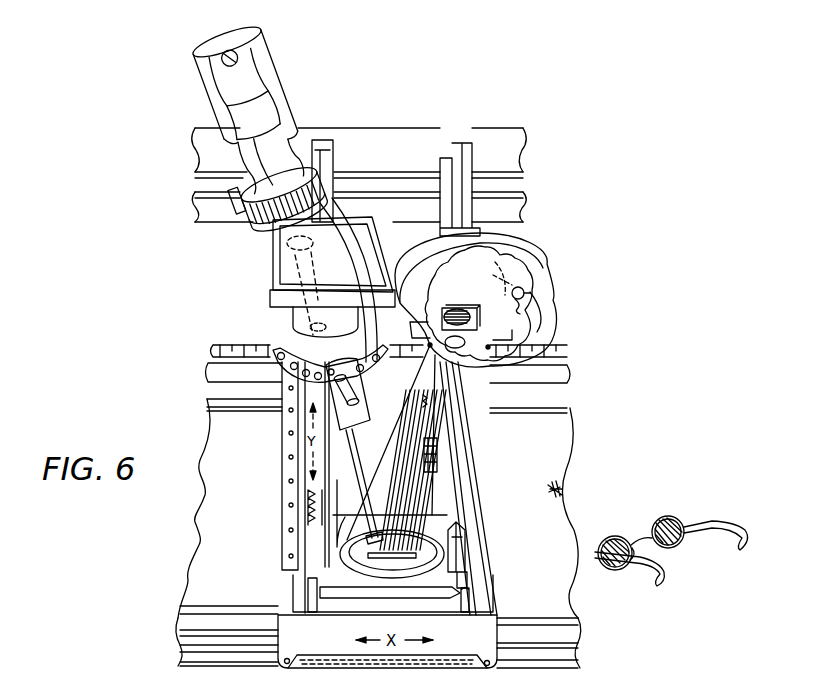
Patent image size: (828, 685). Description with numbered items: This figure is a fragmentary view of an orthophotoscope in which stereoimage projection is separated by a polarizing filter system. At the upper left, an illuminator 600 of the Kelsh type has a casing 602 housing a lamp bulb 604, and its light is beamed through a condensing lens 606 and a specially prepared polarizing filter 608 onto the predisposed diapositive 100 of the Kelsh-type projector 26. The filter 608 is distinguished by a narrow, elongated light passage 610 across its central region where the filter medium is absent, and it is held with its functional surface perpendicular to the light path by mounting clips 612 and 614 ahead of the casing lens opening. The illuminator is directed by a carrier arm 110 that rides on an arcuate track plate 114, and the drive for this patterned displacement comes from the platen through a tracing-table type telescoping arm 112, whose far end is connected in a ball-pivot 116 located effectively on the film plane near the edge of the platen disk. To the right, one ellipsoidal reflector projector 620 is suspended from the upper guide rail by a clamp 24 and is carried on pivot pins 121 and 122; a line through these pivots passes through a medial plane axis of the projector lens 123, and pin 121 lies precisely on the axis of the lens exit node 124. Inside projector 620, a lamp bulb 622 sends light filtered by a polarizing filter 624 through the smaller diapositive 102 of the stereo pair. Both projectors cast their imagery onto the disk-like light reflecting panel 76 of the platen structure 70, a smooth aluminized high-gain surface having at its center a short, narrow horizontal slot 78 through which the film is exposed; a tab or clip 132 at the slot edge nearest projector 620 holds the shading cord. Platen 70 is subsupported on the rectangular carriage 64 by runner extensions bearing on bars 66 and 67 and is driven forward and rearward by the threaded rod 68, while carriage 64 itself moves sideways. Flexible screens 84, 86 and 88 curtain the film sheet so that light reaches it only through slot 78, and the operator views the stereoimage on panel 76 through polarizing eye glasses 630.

The illuminator 600 is at (231, 127).
The casing 602 is at (207, 77).
The lamp bulb 604 is at (240, 59).
The condensing lens 606 is at (276, 177).
The light passage 610 is at (248, 186).
The mounting clip 612 is at (258, 207).
The mounting clip 614 is at (334, 184).
The polarizing filter 608 is at (286, 238).
The diapositive 100 is at (366, 252).
The carrier arm 110 is at (357, 268).
The projector 26 is at (266, 293).
The clamp 24 is at (462, 143).
The projector 620 is at (556, 261).
The polarizing eye glasses 630 is at (642, 528).
The lamp bulb 622 is at (531, 292).
The polarizing filter 624 is at (457, 309).
The diapositive 102 is at (476, 308).
The arcuate track plate 114 is at (276, 361).
The pivot pin 121 is at (430, 348).
The pivot pin 122 is at (490, 349).
The lens exit node 124 is at (461, 346).
The projector lens 123 is at (455, 345).
The telescoping arm 112 is at (350, 446).
The carriage 64 is at (278, 456).
The screen 88 is at (440, 466).
The screen 84 is at (556, 484).
The threaded rod 68 is at (306, 510).
The light reflecting panel 76 is at (350, 520).
The ball-pivot 116 is at (410, 522).
The platen structure 70 is at (463, 516).
The slot 78 is at (372, 570).
The tab or clip 132 is at (422, 567).
The bar 67 is at (305, 604).
The bar 66 is at (472, 600).
The screen 86 is at (373, 605).